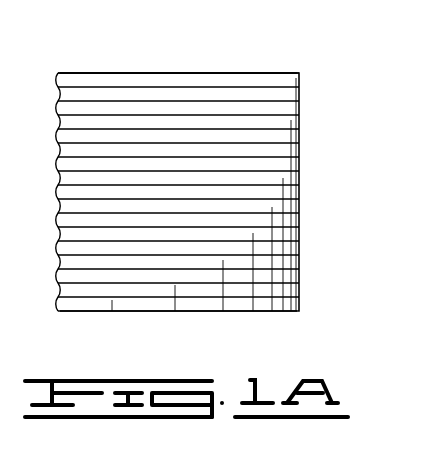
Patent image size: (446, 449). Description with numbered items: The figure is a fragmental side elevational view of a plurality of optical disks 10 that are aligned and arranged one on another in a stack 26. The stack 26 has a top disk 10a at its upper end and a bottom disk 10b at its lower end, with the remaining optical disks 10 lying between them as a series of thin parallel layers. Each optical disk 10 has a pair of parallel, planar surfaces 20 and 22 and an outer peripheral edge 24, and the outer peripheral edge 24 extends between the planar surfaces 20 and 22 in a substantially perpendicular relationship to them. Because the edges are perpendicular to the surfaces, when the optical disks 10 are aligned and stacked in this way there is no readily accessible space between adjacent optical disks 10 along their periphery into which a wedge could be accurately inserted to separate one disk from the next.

The optical disk 10 is at (300, 133).
The top disk 10a is at (240, 73).
The bottom disk 10b is at (212, 311).
The planar surface 20 is at (277, 295).
The planar surface 22 is at (277, 313).
The outer peripheral edge 24 is at (302, 302).
The stack 26 is at (127, 71).